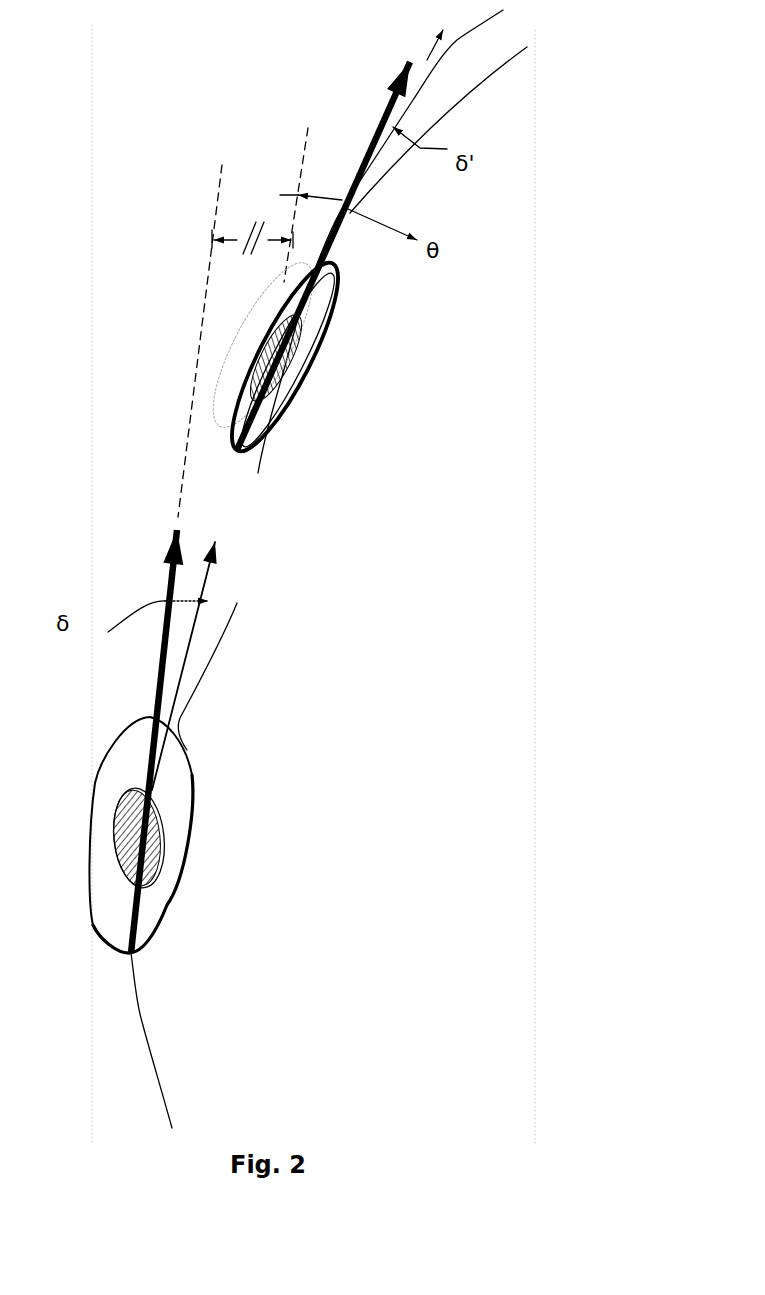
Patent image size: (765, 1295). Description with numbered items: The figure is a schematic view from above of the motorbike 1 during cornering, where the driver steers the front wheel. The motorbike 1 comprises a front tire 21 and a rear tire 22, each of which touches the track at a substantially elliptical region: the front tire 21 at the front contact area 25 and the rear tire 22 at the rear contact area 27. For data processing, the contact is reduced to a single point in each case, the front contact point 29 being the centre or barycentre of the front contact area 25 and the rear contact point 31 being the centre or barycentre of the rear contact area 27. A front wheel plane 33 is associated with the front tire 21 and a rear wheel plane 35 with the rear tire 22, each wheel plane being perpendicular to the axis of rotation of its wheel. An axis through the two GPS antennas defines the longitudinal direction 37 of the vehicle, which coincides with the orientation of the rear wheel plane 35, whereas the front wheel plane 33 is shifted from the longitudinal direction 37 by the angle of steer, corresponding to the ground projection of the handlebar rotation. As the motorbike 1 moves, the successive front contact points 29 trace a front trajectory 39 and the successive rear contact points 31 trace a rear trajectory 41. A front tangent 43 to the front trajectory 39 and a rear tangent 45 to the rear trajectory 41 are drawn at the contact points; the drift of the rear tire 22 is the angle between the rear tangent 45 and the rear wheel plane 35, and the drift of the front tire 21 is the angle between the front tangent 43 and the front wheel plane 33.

The motorbike 1 is at (300, 677).
The front tire 21 is at (292, 424).
The rear tire 22 is at (178, 905).
The front contact area 25 is at (282, 373).
The rear contact area 27 is at (160, 812).
The front contact point 29 is at (291, 350).
The rear contact point 31 is at (148, 843).
The front wheel plane 33 is at (313, 292).
The rear wheel plane 35 is at (147, 736).
The longitudinal direction 37 is at (287, 163).
The front trajectory 39 is at (476, 88).
The rear trajectory 41 is at (152, 1053).
The front tangent 43 is at (403, 239).
The rear tangent 45 is at (210, 577).